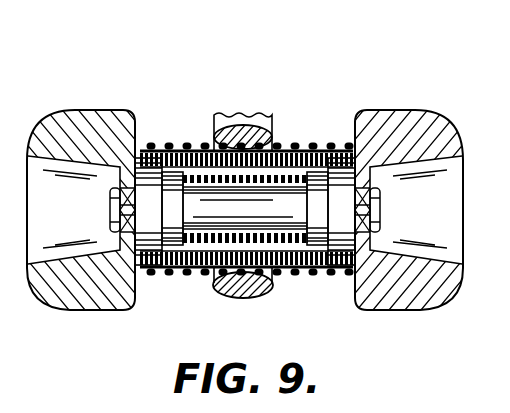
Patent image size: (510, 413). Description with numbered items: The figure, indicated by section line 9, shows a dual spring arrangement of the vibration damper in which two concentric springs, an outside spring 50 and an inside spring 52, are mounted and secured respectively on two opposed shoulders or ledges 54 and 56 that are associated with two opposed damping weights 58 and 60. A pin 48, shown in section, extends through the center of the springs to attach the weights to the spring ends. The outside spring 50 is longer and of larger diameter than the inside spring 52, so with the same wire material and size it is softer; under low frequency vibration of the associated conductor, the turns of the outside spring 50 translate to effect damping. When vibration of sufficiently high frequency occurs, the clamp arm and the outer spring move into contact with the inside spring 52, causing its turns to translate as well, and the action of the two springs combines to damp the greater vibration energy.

The section line 9- 9 is at (108, 216).
The pin 48 is at (292, 200).
The outside spring 50 is at (175, 152).
The inside spring 52 is at (192, 146).
The shoulder 54 is at (340, 268).
The shoulder 56 is at (170, 268).
The damping weight 58 is at (405, 110).
The damping weight 60 is at (82, 110).